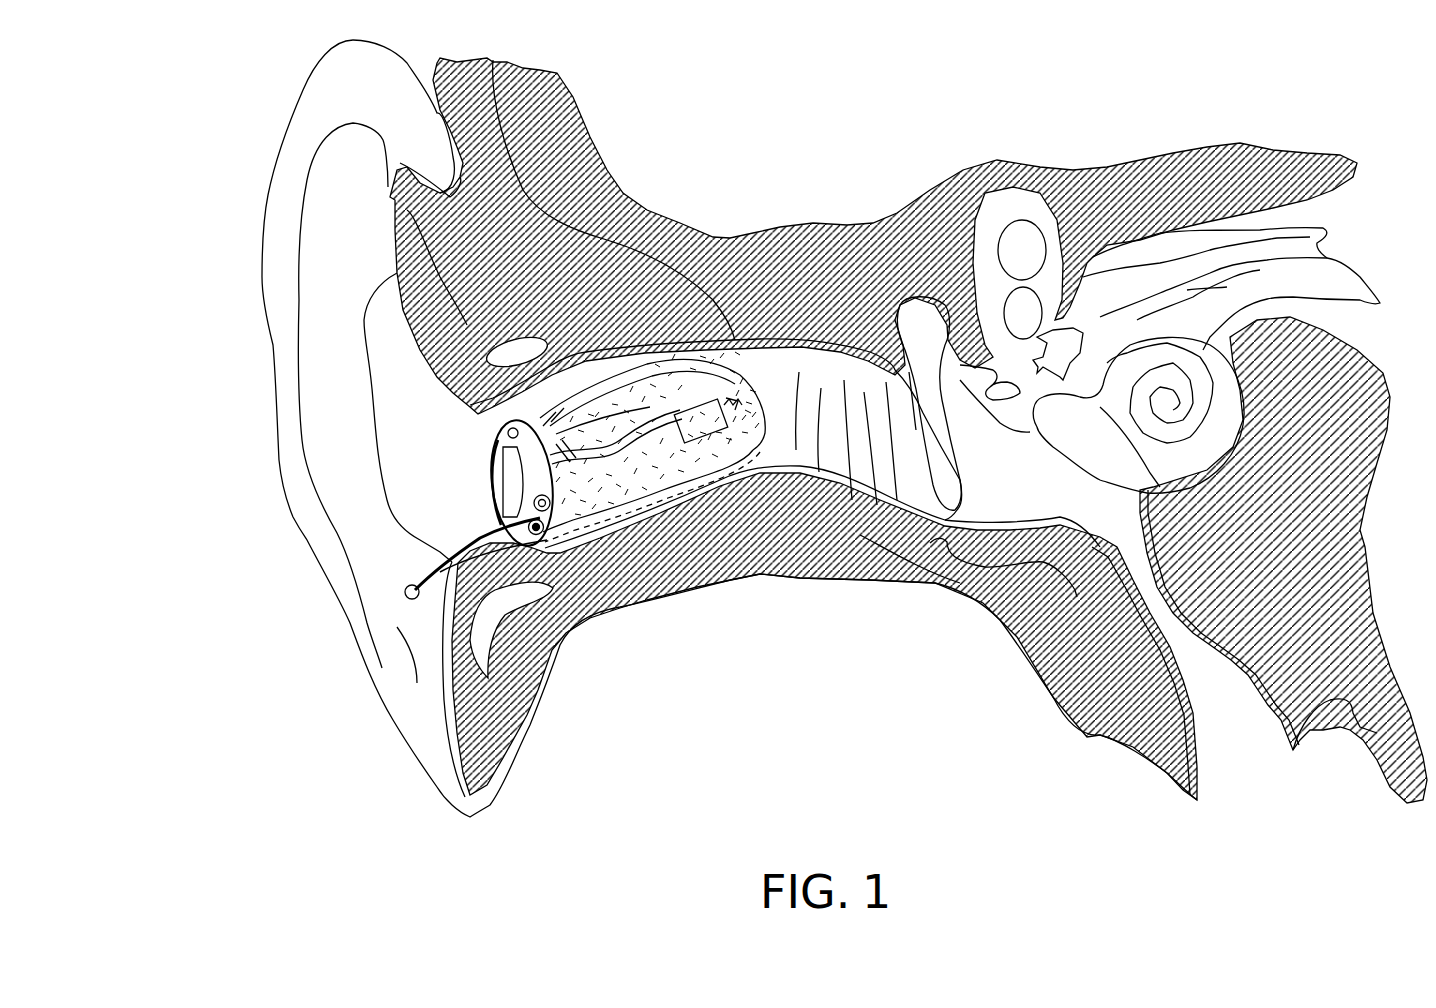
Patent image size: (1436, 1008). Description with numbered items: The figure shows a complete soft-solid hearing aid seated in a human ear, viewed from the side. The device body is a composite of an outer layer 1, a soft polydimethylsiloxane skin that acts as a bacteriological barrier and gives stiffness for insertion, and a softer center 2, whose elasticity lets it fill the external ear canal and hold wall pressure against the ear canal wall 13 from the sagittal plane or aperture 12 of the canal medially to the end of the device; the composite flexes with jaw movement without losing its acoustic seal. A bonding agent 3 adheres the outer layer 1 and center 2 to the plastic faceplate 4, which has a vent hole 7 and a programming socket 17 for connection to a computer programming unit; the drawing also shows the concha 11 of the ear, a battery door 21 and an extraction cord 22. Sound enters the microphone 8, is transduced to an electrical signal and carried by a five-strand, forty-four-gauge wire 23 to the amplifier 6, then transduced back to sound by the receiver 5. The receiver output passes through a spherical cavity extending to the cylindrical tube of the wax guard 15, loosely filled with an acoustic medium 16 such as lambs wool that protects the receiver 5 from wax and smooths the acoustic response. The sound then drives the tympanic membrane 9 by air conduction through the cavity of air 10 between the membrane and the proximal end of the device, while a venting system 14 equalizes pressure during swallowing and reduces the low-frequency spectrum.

The outer layer 1 is at (665, 400).
The soft center 2 is at (697, 492).
The bonding agent 3 is at (552, 522).
The faceplate 4 is at (500, 474).
The acoustic receiver 5 is at (692, 457).
The amplifier 6 is at (565, 452).
The vent hole in faceplate 7 is at (457, 550).
The microphone 8 is at (507, 463).
The tympanic membrane 9 is at (930, 505).
The cavity of air 10 is at (845, 470).
The concha 11 is at (353, 487).
The sagittal plane or aperture of ear canal 12 is at (543, 535).
The external ear canal wall 13 is at (600, 440).
The venting system 14 is at (545, 440).
The wax guard 15 is at (768, 400).
The acoustic medium 16 is at (738, 395).
The programming socket 17 is at (507, 507).
The battery door 21 is at (497, 470).
The extraction cord 22 is at (410, 592).
The five strand forty-four gauge wire 23 is at (635, 423).